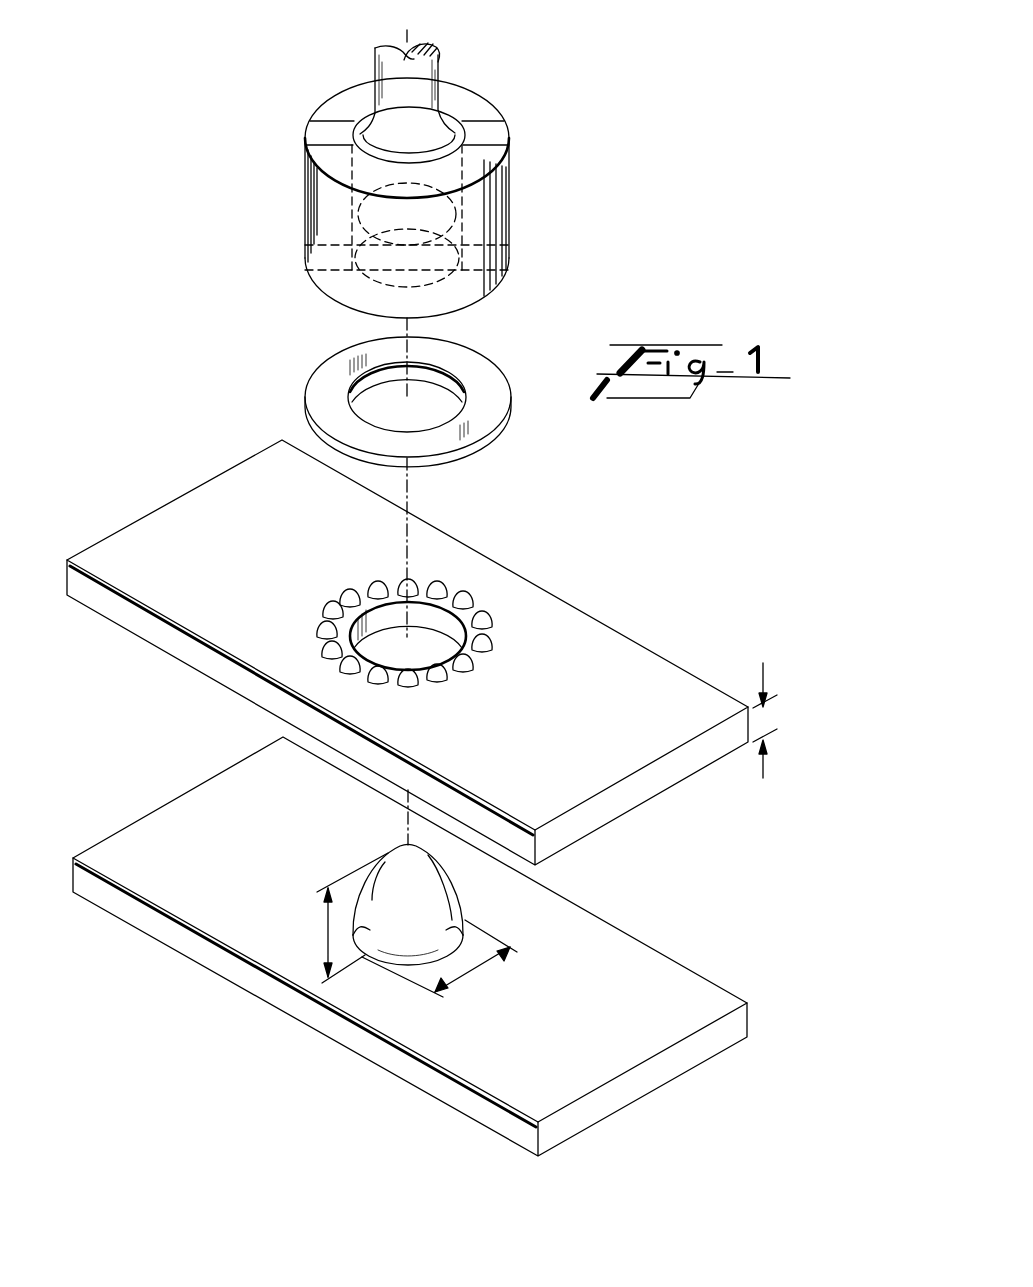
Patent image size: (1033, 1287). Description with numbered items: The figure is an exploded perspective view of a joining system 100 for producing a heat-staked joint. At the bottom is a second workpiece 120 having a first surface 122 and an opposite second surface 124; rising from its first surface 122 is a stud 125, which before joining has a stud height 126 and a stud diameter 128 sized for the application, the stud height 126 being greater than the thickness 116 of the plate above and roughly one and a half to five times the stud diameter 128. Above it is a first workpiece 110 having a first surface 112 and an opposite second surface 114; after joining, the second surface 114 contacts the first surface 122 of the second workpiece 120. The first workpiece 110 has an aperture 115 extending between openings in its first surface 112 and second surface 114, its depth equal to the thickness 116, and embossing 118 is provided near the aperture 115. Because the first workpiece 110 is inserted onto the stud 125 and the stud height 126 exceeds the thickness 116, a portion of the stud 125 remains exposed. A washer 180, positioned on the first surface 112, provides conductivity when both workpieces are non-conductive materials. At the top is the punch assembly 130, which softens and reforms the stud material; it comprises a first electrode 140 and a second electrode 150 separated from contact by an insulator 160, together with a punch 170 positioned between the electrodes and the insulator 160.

The joining system 100 is at (708, 227).
The first workpiece 110 is at (115, 612).
The first surface 112 is at (148, 533).
The second surface 114 is at (193, 667).
The aperture 115 is at (442, 615).
The thickness 116 is at (763, 768).
The embossing 118 is at (337, 610).
The second workpiece 120 is at (142, 920).
The first surface 122 is at (150, 855).
The second surface 124 is at (207, 963).
The stud 125 is at (395, 840).
The stud height 126 is at (327, 930).
The stud diameter 128 is at (473, 972).
The punch assembly 130 is at (277, 227).
The first electrode 140 is at (487, 157).
The second electrode 150 is at (468, 102).
The insulator 160 is at (315, 137).
The punch 170 is at (387, 72).
The washer 180 is at (320, 392).